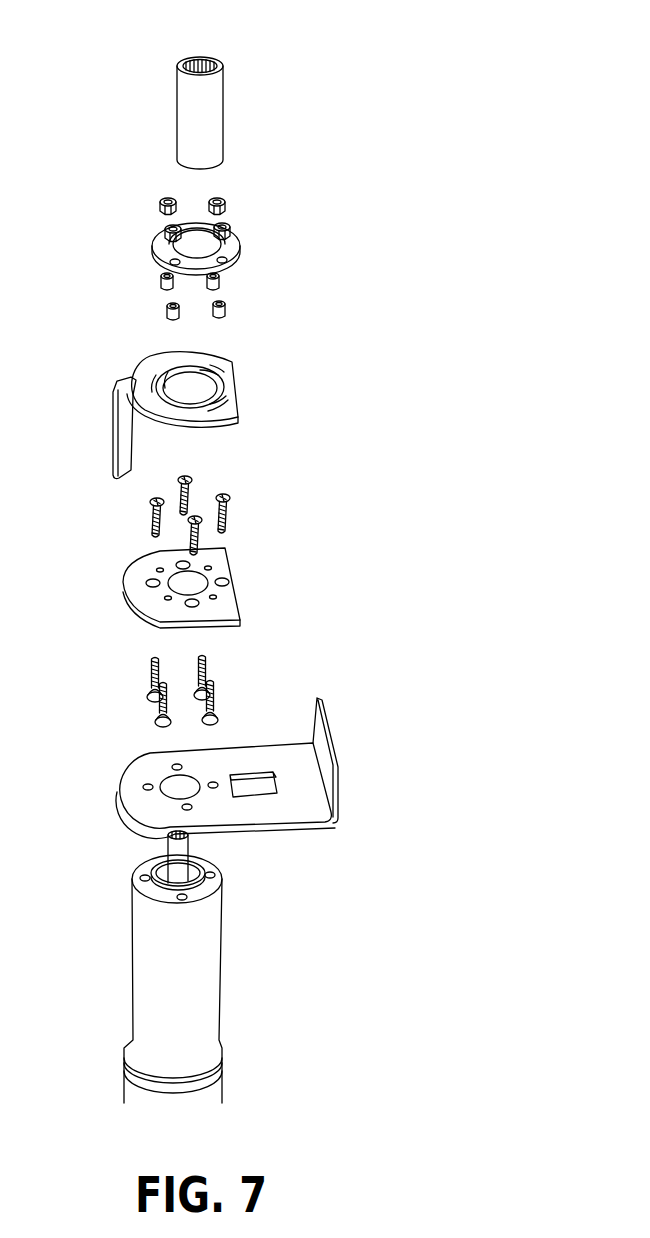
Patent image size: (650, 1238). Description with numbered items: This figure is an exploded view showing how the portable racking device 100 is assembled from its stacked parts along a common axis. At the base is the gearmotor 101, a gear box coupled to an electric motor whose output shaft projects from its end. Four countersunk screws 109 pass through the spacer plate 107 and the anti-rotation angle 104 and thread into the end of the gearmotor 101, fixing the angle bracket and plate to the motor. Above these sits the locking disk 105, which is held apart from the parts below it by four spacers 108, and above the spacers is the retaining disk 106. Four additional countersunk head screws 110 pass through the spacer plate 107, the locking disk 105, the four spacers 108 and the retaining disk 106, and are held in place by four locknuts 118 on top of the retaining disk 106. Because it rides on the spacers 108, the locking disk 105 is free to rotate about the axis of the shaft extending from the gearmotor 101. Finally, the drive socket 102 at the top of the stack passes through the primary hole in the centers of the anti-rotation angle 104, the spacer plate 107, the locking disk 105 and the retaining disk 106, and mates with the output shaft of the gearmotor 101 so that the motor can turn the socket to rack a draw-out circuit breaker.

The portable racking device 100 is at (472, 140).
The gearmotor 101 is at (185, 982).
The drive socket 102 is at (202, 85).
The anti-rotation angle 104 is at (140, 767).
The locking disk 105 is at (148, 372).
The retaining disk 106 is at (158, 247).
The spacer plate 107 is at (233, 588).
The spacers 108 is at (223, 303).
The countersunk screws 109 is at (150, 502).
The countersunk head screws 110 is at (213, 705).
The locknuts 118 is at (218, 202).